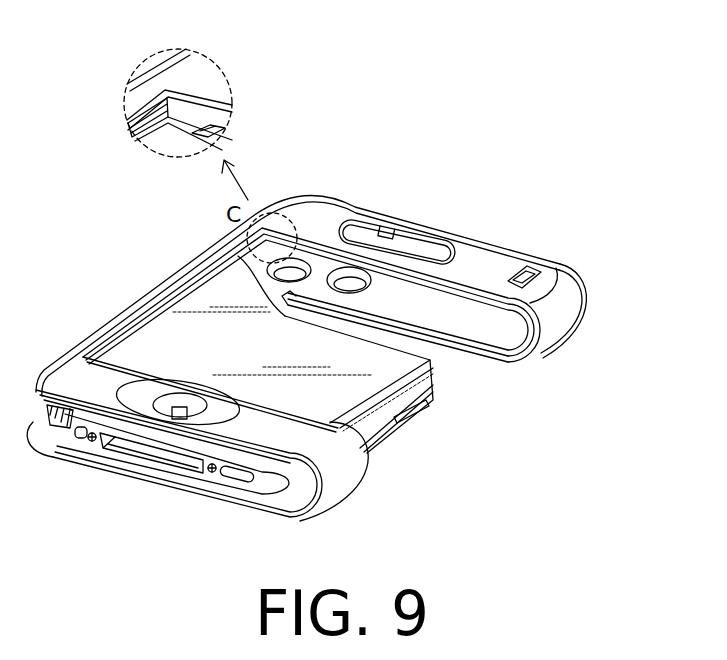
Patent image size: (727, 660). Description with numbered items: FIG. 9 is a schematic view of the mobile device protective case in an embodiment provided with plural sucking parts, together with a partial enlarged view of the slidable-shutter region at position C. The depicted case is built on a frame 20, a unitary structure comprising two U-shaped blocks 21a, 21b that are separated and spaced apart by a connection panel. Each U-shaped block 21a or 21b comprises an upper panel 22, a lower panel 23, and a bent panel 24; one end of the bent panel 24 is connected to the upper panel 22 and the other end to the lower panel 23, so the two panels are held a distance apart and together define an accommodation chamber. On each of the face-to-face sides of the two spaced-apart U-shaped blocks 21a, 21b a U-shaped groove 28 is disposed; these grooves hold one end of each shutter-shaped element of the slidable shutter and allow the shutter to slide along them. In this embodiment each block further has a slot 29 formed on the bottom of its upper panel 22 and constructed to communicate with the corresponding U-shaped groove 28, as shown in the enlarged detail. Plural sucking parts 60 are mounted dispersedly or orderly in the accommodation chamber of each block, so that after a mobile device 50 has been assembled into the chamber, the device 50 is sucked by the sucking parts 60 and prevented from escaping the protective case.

The frame 20 is at (404, 214).
The U-shaped block 21a is at (588, 283).
The U-shaped block 21b is at (316, 524).
The upper panel 22 is at (192, 74).
The lower panel 23 is at (320, 282).
The bent panel 24 is at (560, 316).
The U-shaped groove 28 is at (360, 320).
The slot 29 is at (243, 243).
The mobile device 50 is at (434, 396).
The sucking part 60 is at (297, 262).